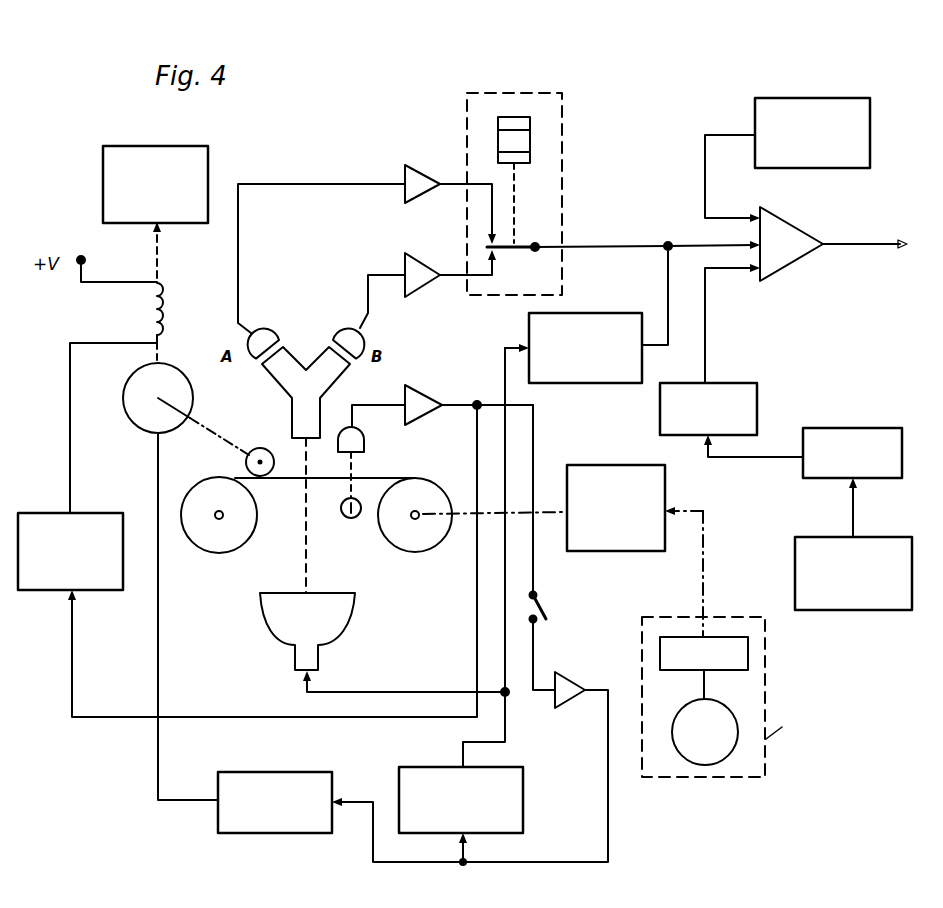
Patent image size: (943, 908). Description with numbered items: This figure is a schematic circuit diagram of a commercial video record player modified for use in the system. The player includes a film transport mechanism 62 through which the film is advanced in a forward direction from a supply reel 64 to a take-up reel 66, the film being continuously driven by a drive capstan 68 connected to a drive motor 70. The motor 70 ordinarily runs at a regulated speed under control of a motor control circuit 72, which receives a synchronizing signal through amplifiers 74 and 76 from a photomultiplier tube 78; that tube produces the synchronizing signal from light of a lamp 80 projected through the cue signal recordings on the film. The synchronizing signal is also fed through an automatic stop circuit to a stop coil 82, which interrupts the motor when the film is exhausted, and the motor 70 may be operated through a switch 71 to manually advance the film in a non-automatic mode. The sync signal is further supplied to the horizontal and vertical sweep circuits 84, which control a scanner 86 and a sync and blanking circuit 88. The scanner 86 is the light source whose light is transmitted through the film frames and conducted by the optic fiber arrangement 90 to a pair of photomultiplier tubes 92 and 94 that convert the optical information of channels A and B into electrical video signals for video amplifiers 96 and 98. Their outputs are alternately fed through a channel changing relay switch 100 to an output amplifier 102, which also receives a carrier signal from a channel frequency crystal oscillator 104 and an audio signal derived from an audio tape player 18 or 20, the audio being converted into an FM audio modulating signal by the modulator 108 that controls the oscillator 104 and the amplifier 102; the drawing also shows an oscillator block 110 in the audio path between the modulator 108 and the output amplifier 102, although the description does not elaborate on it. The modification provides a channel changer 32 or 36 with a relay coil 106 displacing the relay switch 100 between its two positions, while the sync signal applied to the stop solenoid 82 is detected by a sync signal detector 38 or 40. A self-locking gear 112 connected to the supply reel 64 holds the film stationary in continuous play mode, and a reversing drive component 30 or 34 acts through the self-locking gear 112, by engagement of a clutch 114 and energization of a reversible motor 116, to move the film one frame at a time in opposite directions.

The audio tape player 18 is at (853, 592).
The audio tape player 20 is at (888, 612).
The reversing drive component 30 is at (754, 724).
The reversing drive component 34 is at (750, 781).
The channel changer 32 is at (554, 177).
The channel changer 36 is at (570, 101).
The sync signal detector 38 is at (118, 172).
The sync signal detector 40 is at (103, 160).
The film transport mechanism 62 is at (205, 566).
The supply reel 64 is at (428, 540).
The take-up reel 66 is at (245, 540).
The drive capstan 68 is at (245, 460).
The drive motor 70 is at (128, 410).
The switch 71 is at (546, 610).
The motor control circuit 72 is at (318, 773).
The amplifier 74 is at (425, 385).
The amplifier 76 is at (576, 678).
The photomultiplier tube 78 is at (364, 445).
The lamp 80 is at (105, 580).
The stop coil 82 is at (166, 297).
The horizontal and vertical sweep circuits 84 is at (525, 808).
The scanner 86 is at (340, 635).
The sync and blanking circuit 88 is at (616, 370).
The optic fiber arrangement 90 is at (274, 376).
The photomultiplier tube 92 is at (266, 330).
The photomultiplier tube 94 is at (345, 338).
The video amplifier 96 is at (400, 172).
The video amplifier 98 is at (402, 262).
The channel changing relay switch 100 is at (505, 251).
The output amplifier 102 is at (788, 234).
The channel frequency crystal oscillator 104 is at (807, 104).
The relay coil 106 is at (520, 140).
The modulator 108 is at (857, 428).
The 4.5 MHz oscillator 110 is at (742, 383).
The self-locking gear 112 is at (622, 553).
The clutch 114 is at (750, 655).
The reversible motor 116 is at (697, 754).